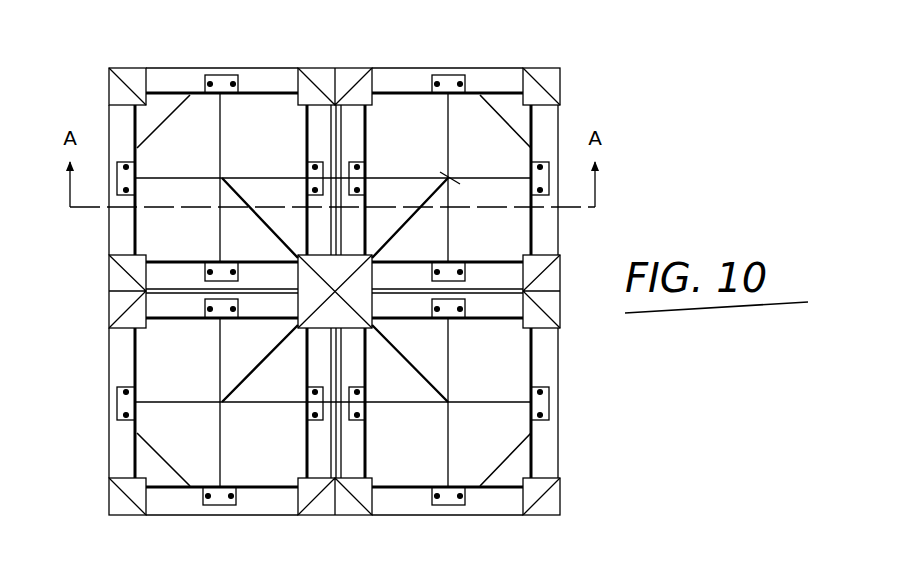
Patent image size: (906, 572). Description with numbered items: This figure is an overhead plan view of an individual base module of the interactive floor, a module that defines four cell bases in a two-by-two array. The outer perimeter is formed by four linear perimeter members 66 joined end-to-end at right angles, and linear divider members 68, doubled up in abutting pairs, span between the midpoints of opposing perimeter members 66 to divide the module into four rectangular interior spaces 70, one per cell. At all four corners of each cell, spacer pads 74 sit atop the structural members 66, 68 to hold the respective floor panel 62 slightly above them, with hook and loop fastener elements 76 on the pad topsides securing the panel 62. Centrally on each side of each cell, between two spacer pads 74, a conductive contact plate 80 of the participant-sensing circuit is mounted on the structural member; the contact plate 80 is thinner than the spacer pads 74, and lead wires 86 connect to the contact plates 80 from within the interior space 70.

The floor panel 62 is at (627, 88).
The perimeter member 66 is at (180, 80).
The divider member 68 is at (311, 140).
The interior space 70 is at (250, 117).
The spacer pad 74 is at (138, 93).
The hook and loop fastener element 76 is at (123, 73).
The contact plate 80 is at (221, 75).
The lead wire 86 is at (457, 184).